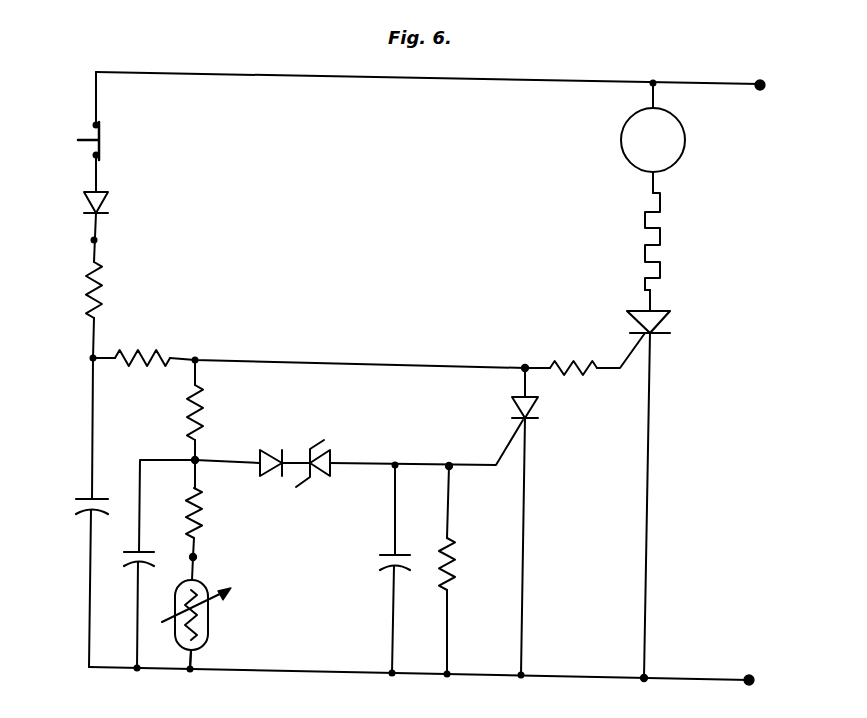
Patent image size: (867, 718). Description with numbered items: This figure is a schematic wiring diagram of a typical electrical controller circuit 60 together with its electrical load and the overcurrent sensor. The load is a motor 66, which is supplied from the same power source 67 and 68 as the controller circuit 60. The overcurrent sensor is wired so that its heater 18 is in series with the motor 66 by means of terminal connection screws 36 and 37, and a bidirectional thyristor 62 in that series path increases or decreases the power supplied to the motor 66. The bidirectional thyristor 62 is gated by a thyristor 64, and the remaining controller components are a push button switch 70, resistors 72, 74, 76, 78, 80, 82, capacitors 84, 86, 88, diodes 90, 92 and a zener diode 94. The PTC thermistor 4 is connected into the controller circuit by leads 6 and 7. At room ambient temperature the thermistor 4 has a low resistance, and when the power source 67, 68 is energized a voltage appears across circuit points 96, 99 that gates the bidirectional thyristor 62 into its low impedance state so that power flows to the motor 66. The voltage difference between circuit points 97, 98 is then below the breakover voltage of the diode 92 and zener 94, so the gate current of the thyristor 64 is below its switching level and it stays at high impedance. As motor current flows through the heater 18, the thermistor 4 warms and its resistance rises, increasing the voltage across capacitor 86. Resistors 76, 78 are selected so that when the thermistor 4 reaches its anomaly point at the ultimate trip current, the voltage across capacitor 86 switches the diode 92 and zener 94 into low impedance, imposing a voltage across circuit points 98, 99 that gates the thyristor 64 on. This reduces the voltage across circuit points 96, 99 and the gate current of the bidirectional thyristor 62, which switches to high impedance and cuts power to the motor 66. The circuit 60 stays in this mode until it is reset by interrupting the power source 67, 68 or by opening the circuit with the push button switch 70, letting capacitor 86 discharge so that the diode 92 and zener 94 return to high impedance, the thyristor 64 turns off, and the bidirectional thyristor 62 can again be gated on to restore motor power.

The controller circuit 60 is at (152, 50).
The power source 67 is at (763, 90).
The power source 68 is at (750, 678).
The push button switch 70 is at (103, 138).
The diode 90 is at (105, 205).
The resistor 72 is at (100, 282).
The resistor 74 is at (140, 352).
The resistor 76 is at (190, 408).
The circuit point 97 is at (197, 460).
The diode 92 is at (272, 458).
The zener diode 94 is at (322, 453).
The circuit point 98 is at (450, 463).
The circuit point 96 is at (524, 366).
The resistor 82 is at (572, 360).
The thyristor 64 is at (540, 407).
The bidirectional thyristor 62 is at (662, 326).
The motor 66 is at (683, 150).
The terminal connection screw 36 is at (653, 187).
The heater 18 is at (661, 237).
The terminal connection screw 37 is at (650, 292).
The capacitor 84 is at (88, 497).
The capacitor 86 is at (140, 556).
The resistor 78 is at (200, 523).
The lead 6 is at (200, 568).
The PTC thermistor 4 is at (215, 616).
The lead 7 is at (202, 662).
The capacitor 88 is at (386, 556).
The resistor 80 is at (455, 571).
The circuit point 99 is at (644, 678).